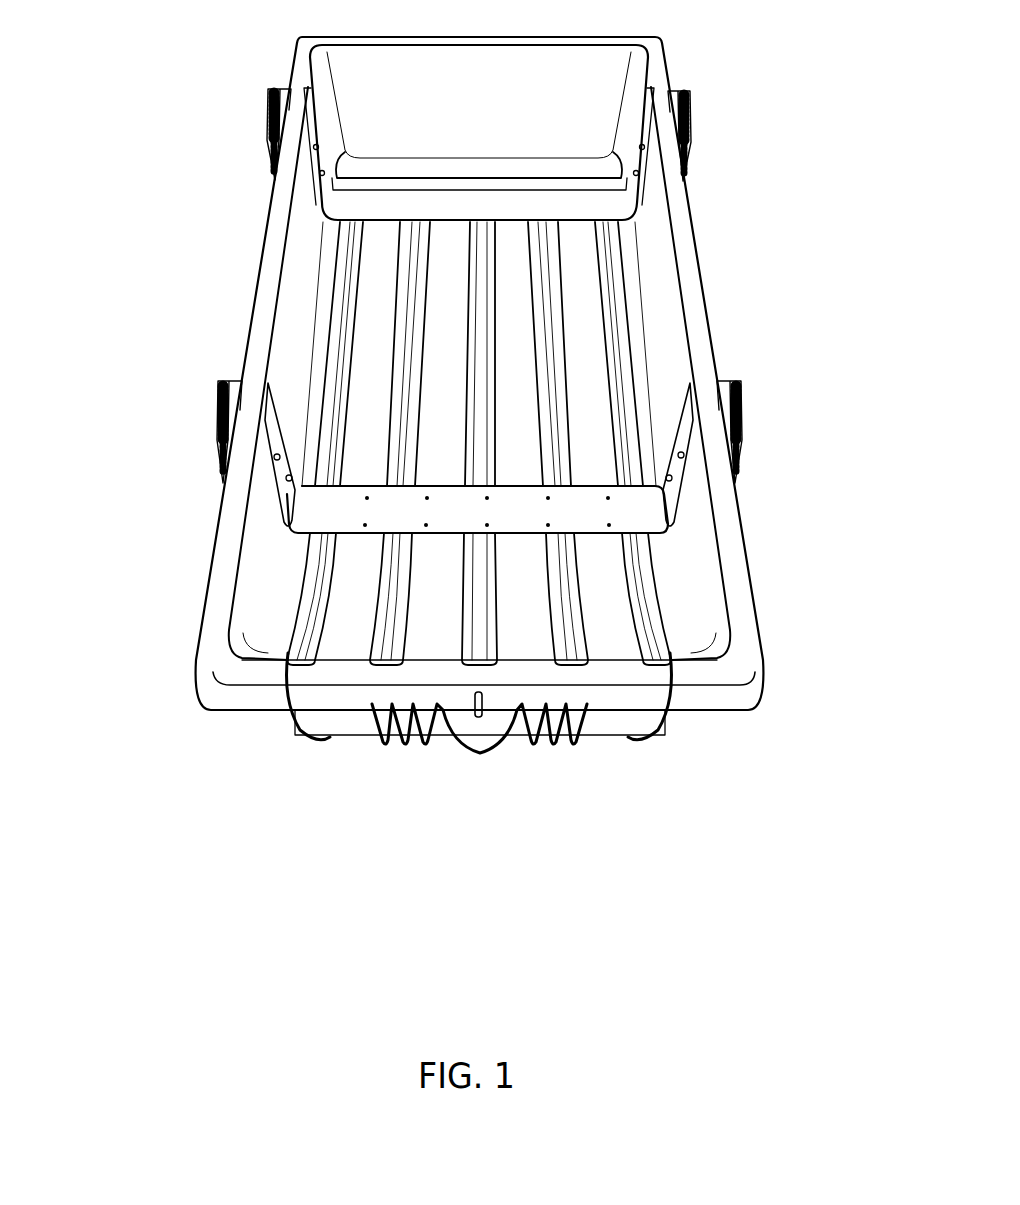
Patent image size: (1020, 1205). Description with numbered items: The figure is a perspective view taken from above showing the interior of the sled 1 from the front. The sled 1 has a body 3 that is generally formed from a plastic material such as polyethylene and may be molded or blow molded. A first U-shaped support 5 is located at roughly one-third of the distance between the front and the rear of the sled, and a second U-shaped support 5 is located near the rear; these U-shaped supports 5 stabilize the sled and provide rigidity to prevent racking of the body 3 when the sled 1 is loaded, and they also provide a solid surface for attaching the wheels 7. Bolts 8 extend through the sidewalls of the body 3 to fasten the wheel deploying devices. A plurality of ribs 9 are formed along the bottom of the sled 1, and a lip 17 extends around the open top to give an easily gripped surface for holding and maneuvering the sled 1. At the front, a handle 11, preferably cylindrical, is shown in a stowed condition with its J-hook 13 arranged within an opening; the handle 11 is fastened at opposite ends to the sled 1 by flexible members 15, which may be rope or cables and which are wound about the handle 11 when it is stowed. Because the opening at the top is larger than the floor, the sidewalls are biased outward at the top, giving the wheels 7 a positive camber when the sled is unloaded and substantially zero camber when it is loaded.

The sled 1 is at (743, 783).
The body 3 is at (190, 212).
The U-shaped support 5 is at (612, 198).
The wheel 7 is at (218, 413).
The bolt 8 is at (275, 457).
The rib 9 is at (308, 607).
The handle 11 is at (380, 788).
The J-hook 13 is at (488, 742).
The flexible member 15 is at (294, 710).
The lip 17 is at (742, 595).